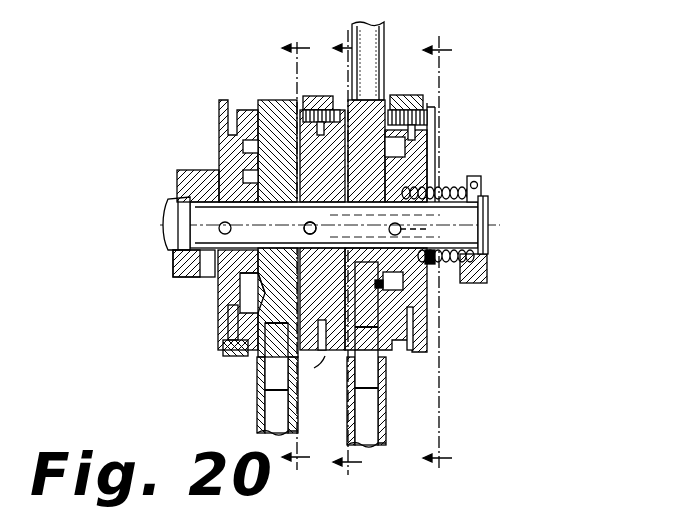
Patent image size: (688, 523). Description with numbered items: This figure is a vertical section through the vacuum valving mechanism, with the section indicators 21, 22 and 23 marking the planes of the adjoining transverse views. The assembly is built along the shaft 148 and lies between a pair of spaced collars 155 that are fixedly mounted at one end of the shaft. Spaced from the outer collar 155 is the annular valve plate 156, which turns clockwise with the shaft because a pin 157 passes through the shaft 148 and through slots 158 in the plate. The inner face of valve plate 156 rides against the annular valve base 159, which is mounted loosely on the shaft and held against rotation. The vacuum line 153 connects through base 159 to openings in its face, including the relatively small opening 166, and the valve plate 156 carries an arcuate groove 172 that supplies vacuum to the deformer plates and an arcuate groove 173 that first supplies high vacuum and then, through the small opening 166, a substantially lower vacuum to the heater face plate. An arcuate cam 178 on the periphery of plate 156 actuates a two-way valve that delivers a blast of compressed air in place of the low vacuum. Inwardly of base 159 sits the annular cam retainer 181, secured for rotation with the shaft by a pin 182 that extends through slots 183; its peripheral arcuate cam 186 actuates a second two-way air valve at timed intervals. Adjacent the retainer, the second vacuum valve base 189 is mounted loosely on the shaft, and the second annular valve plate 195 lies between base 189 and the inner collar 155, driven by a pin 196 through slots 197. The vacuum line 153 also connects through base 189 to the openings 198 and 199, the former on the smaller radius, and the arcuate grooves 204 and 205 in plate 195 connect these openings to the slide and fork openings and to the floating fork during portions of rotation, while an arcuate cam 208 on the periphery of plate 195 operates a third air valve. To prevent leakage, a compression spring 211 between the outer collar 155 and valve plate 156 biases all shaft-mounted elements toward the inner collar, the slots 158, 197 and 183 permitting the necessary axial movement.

The section line 21- 21 is at (452, 263).
The section line 22- 22 is at (341, 262).
The section line 23- 23 is at (279, 260).
The shaft 148 is at (490, 242).
The vacuum line 153 is at (383, 418).
The collar 155 is at (488, 278).
The annular valve plate 156 is at (425, 346).
The pin 157 is at (394, 229).
The slot 158 is at (433, 223).
The annular valve base 159 is at (378, 102).
The opening 166 is at (380, 290).
The arcuate groove 172 is at (405, 148).
The arcuate groove 173 is at (403, 287).
The arcuate cam 178 is at (410, 104).
The annular cam retainer 181 is at (325, 358).
The pin 182 is at (313, 224).
The slot 183 is at (301, 302).
The arcuate cam 186 is at (330, 90).
The second vacuum valve base 189 is at (272, 94).
The second annular valve plate 195 is at (219, 134).
The pin 196 is at (205, 224).
The slot 197 is at (330, 225).
The opening 198 is at (260, 277).
The opening 199 is at (260, 298).
The arcuate groove 204 is at (236, 313).
The arcuate groove 205 is at (246, 178).
The arcuate cam 208 is at (234, 356).
The compression spring 211 is at (446, 190).